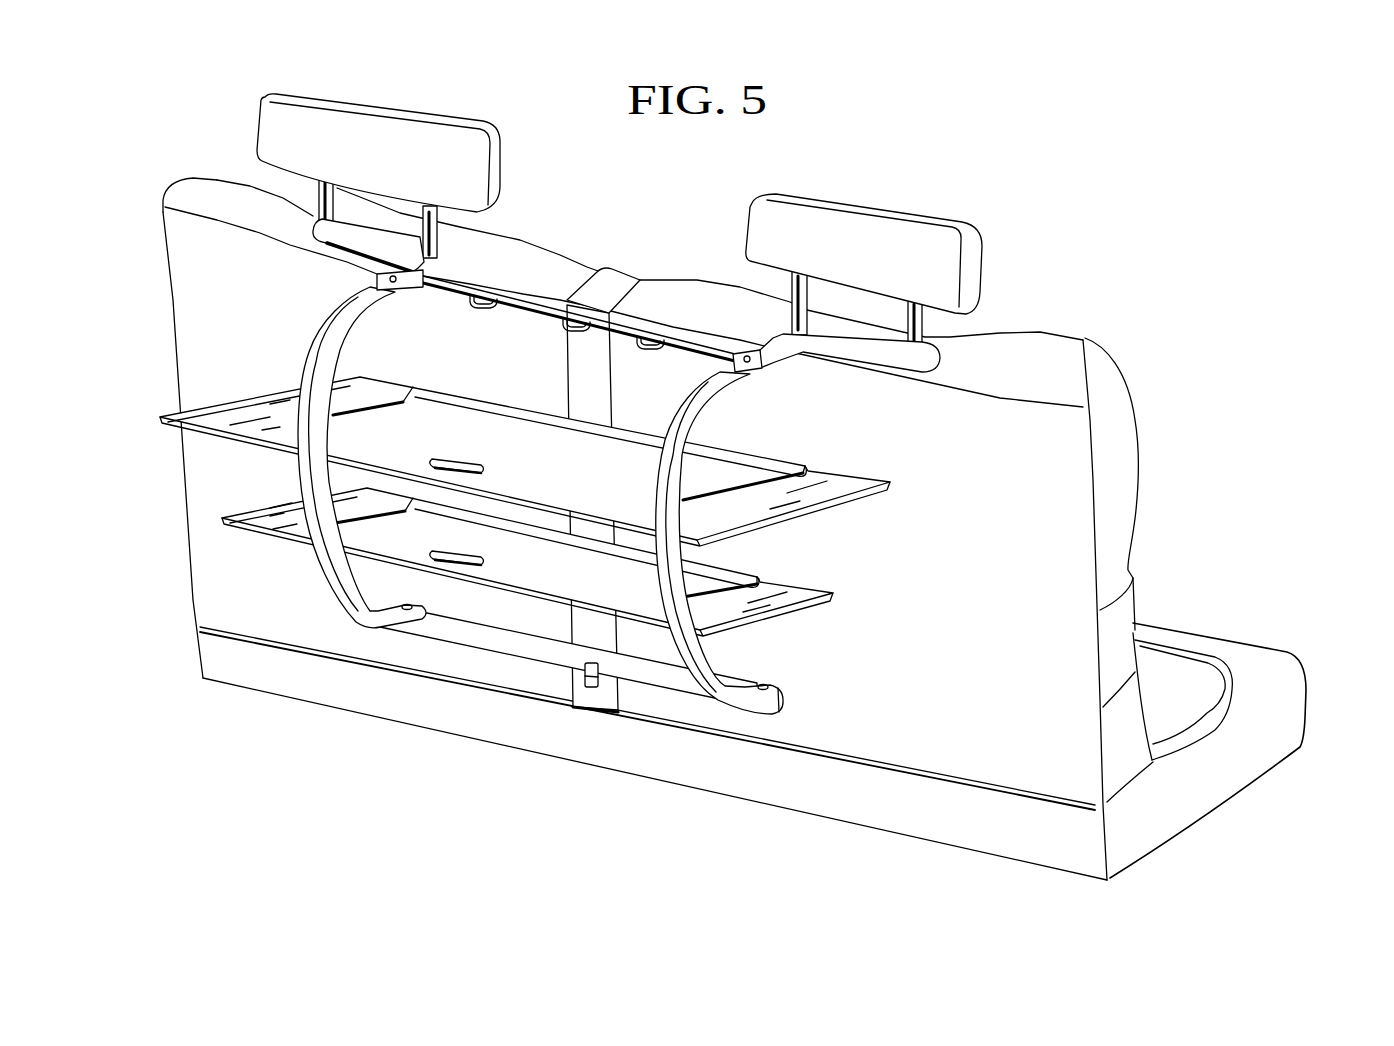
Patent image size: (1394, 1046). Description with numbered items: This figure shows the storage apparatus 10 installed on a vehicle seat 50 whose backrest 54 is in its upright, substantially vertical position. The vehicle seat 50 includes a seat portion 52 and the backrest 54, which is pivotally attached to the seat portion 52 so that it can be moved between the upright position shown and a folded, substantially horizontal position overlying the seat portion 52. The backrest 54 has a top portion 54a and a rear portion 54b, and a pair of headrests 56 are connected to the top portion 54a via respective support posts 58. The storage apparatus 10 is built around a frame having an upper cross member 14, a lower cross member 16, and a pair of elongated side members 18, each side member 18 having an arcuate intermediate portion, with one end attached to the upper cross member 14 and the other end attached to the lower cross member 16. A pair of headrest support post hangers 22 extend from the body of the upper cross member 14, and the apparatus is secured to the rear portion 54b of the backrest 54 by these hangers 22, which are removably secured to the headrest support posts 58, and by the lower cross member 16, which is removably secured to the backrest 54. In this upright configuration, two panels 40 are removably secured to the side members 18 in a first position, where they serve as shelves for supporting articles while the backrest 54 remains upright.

The storage apparatus 10 is at (917, 528).
The upper cross member 14 is at (530, 307).
The lower cross member 16 is at (490, 638).
The side members 18 is at (323, 557).
The headrest support post hangers 22 is at (337, 237).
The panels 40 is at (237, 513).
The vehicle seat 50 is at (1280, 710).
The seat portion 52 is at (1243, 660).
The backrest 54 is at (1017, 357).
The top portion 54a is at (560, 257).
The rear portion 54b is at (1032, 441).
The headrests 56 is at (420, 117).
The support posts 58 is at (424, 226).